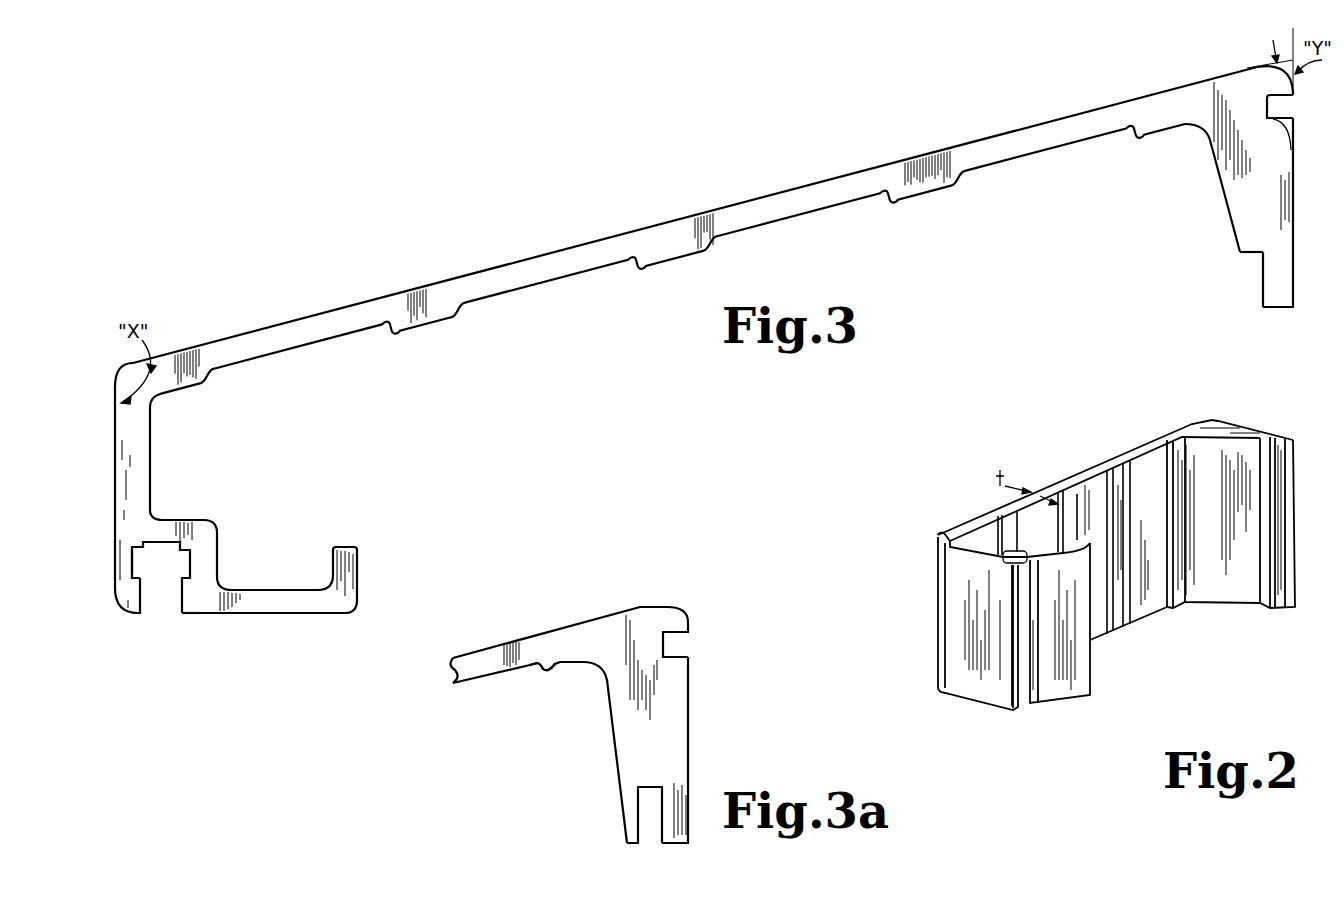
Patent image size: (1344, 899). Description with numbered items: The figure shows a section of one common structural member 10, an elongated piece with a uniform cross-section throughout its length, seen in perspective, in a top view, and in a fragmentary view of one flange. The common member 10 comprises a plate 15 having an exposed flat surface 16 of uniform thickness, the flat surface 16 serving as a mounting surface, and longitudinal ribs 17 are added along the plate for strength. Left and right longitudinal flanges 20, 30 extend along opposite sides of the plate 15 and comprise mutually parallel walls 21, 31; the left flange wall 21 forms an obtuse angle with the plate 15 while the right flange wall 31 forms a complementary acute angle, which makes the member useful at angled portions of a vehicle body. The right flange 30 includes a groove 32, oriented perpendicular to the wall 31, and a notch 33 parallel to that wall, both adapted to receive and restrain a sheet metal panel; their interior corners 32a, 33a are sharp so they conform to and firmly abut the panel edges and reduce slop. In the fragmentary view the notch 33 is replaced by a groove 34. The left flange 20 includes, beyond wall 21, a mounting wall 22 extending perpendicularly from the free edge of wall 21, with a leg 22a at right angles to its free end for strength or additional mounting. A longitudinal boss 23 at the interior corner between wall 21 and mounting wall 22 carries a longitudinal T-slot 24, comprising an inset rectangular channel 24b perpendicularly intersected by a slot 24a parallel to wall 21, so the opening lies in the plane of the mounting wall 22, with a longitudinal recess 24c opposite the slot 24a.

In FIG. 3, the common structural member 10 is at (452, 278).
In FIG. 3A, the common structural member 10 is at (558, 645).
In FIG. 2, the common structural member 10 is at (1185, 422).
In FIG. 3, the plate 15 is at (485, 288).
In FIG. 2, the plate 15 is at (1078, 470).
In FIG. 2, the exposed flat surface 16 is at (1112, 467).
In FIG. 3, the longitudinal ribs 17 is at (197, 387).
In FIG. 3A, the longitudinal ribs 17 is at (557, 663).
In FIG. 2, the longitudinal ribs 17 is at (1123, 473).
In FIG. 3, the left longitudinal flange 20 is at (114, 443).
In FIG. 2, the left longitudinal flange 20 is at (947, 620).
In FIG. 3, the left flange wall 21 is at (138, 444).
In FIG. 3, the mounting wall 22 is at (292, 600).
In FIG. 2, the mounting wall 22 is at (1051, 625).
In FIG. 3, the leg 22a is at (357, 562).
In FIG. 3, the longitudinal boss 23 is at (198, 530).
In FIG. 3, the longitudinal T-slot 24 is at (168, 585).
In FIG. 3, the slot 24a is at (183, 602).
In FIG. 3, the inset rectangular channel 24b is at (134, 566).
In FIG. 3, the longitudinal recess 24c is at (160, 540).
In FIG. 3, the right longitudinal flange 30 is at (1294, 280).
In FIG. 3A, the right longitudinal flange 30 is at (689, 808).
In FIG. 2, the right longitudinal flange 30 is at (1245, 432).
In FIG. 3, the right flange wall 31 is at (1260, 187).
In FIG. 3A, the right flange wall 31 is at (676, 752).
In FIG. 3, the groove 32 is at (1280, 110).
In FIG. 3A, the groove 32 is at (680, 644).
In FIG. 3, the interior corner of groove 32a is at (1262, 108).
In FIG. 3, the notch 33 is at (1243, 262).
In FIG. 3, the interior corner of notch 33a is at (1255, 262).
In FIG. 3A, the groove 34 is at (650, 830).